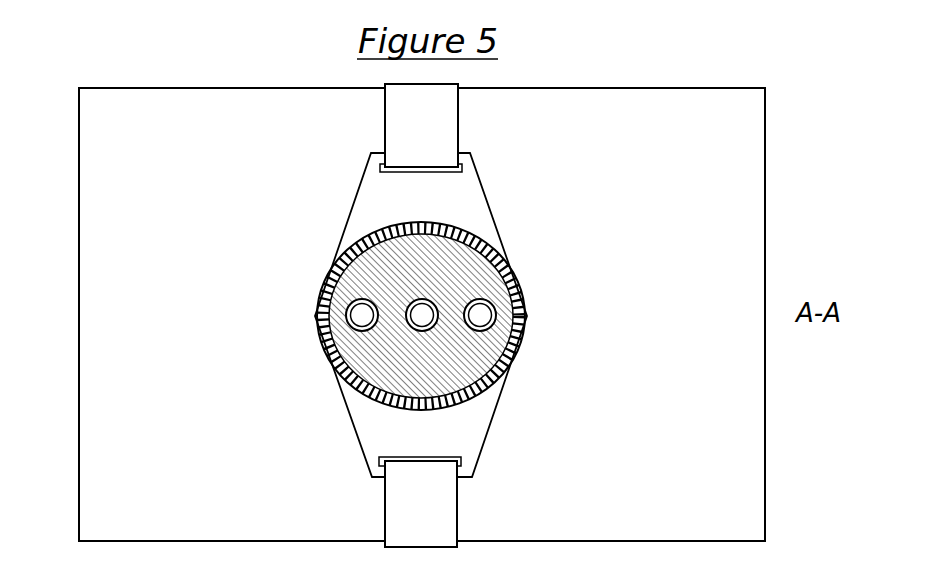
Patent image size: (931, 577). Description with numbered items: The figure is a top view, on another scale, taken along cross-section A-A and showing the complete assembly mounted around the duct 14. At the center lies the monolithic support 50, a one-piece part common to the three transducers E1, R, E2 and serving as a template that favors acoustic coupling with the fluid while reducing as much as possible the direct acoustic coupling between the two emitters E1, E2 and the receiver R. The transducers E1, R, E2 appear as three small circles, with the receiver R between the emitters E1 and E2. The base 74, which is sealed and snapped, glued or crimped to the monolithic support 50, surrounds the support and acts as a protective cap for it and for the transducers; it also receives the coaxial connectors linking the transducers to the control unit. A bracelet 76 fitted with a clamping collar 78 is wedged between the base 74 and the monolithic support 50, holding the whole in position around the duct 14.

The duct 14 is at (675, 292).
The monolithic support 50 is at (457, 353).
The base 74 is at (322, 280).
The bracelet 76 is at (365, 212).
The clamping collar 78 is at (400, 143).
The emitter transducer E1 is at (361, 307).
The emitter transducer E2 is at (478, 308).
The receiver transducer R is at (420, 301).